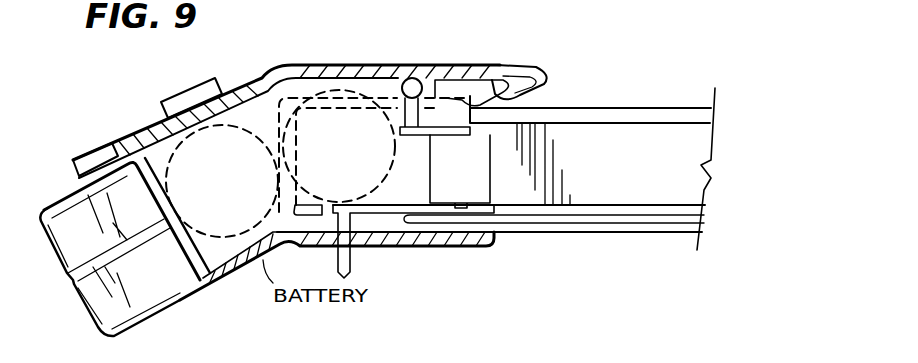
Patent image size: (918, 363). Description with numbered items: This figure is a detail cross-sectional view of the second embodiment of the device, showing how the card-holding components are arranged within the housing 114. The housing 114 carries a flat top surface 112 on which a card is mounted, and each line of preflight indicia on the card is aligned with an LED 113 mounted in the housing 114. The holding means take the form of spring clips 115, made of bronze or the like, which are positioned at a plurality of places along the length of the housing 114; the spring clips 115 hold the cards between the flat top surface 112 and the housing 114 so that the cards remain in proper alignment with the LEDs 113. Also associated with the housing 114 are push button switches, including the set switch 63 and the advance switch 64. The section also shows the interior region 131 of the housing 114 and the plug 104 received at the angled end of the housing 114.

The housing 114 is at (292, 67).
The LED 113 is at (413, 67).
The spring clips 115 is at (548, 92).
The top surface 112 is at (640, 108).
The interior compartment 131 is at (677, 149).
The advance switch 64 is at (193, 92).
The set switch 63 is at (103, 147).
The plug 104 is at (173, 310).